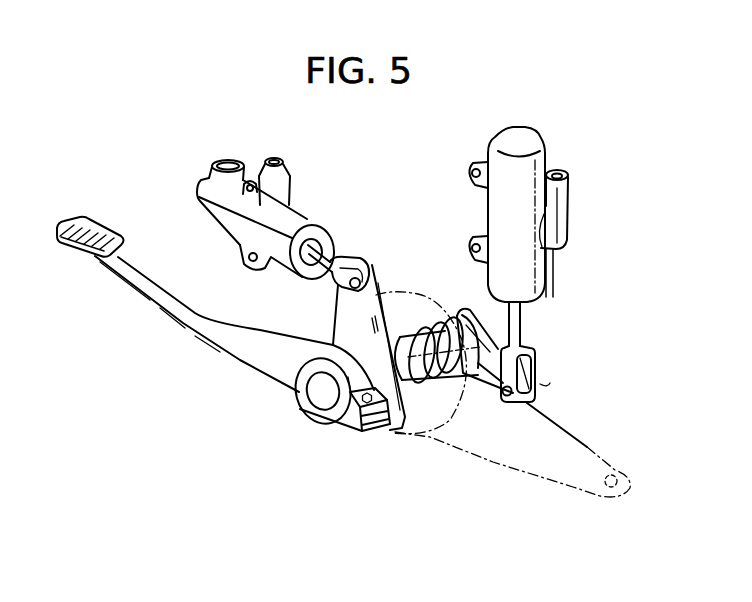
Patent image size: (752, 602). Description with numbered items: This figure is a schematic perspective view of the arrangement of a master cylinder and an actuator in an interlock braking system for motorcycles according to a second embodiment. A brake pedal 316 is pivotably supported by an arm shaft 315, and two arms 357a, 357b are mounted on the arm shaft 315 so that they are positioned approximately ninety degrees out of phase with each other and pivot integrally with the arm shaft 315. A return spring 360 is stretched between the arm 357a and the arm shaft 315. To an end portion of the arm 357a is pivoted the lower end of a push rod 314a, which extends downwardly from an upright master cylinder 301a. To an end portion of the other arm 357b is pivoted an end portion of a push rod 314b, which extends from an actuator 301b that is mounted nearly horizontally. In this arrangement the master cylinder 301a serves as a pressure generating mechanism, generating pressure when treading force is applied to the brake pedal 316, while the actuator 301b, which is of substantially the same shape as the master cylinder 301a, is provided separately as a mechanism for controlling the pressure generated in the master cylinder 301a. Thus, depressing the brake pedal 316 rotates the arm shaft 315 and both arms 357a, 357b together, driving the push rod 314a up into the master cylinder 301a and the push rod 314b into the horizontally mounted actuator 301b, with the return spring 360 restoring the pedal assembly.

The master cylinder 301a is at (555, 275).
The actuator 301b is at (300, 222).
The push rod 314a is at (523, 328).
The push rod 314b is at (344, 258).
The arm shaft 315 is at (318, 400).
The brake pedal 316 is at (260, 363).
The arm 357a is at (464, 312).
The arm 357b is at (337, 322).
The return spring 360 is at (468, 378).